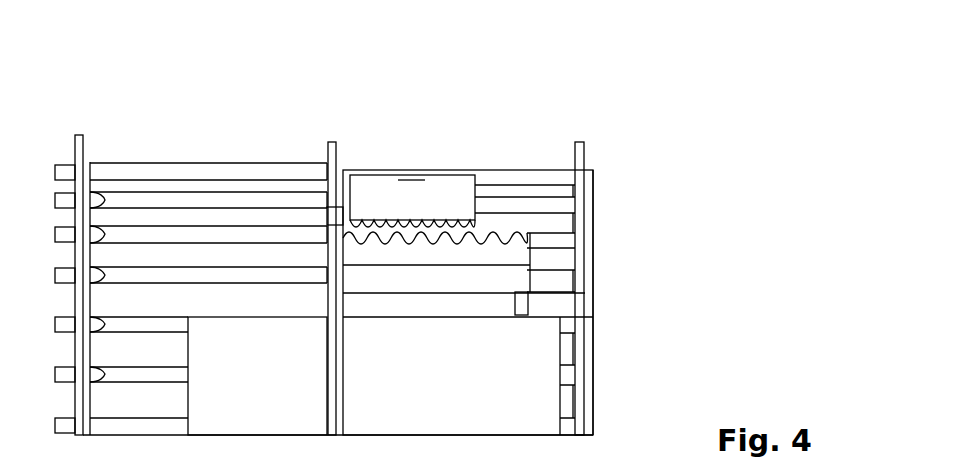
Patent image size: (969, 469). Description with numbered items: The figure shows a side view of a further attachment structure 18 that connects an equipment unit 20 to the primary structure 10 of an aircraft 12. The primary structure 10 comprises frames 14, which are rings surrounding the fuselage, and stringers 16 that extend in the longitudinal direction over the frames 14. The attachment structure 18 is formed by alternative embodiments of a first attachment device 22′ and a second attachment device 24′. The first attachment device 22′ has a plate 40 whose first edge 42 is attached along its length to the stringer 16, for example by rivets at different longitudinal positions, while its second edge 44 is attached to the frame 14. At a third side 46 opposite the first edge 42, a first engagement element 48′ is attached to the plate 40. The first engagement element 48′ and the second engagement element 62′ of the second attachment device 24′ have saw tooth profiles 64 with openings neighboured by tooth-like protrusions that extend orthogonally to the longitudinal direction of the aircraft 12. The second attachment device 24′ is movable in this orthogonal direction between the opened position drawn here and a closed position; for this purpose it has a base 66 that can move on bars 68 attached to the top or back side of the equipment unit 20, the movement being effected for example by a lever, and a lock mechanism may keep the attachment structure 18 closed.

The primary structure 10 is at (176, 104).
The aircraft 12 is at (279, 98).
The frame 14 is at (84, 150).
The stringer 16 is at (228, 165).
The attachment structure 18 is at (434, 99).
The equipment unit 20 is at (584, 402).
The first attachment device 22′ is at (411, 184).
The second attachment device 24′ is at (518, 293).
The plate 40 is at (433, 197).
The first edge 42 is at (390, 172).
The second edge 44 is at (314, 175).
The third side 46 is at (448, 220).
The first engagement element 48′ is at (410, 220).
The second engagement element 62′ is at (477, 248).
The saw tooth profile 64 is at (370, 175).
The base 66 is at (512, 282).
The bar 68 is at (525, 305).